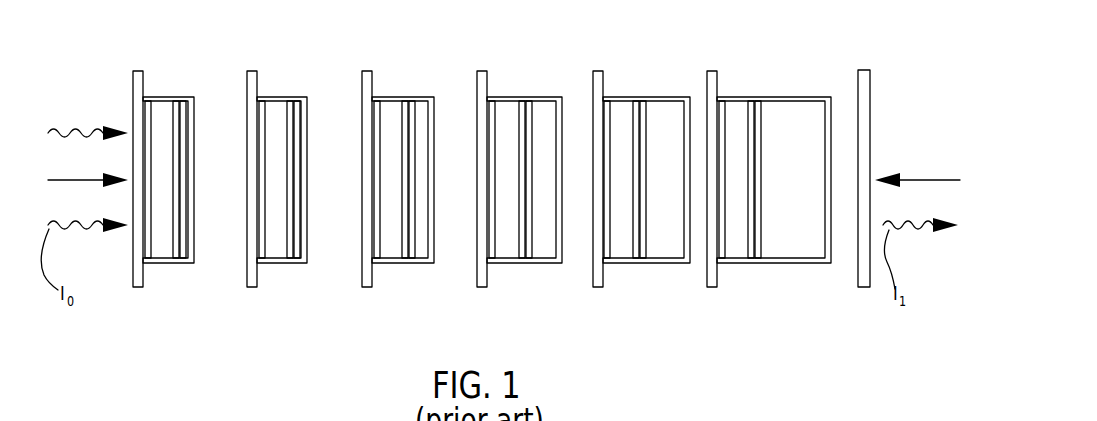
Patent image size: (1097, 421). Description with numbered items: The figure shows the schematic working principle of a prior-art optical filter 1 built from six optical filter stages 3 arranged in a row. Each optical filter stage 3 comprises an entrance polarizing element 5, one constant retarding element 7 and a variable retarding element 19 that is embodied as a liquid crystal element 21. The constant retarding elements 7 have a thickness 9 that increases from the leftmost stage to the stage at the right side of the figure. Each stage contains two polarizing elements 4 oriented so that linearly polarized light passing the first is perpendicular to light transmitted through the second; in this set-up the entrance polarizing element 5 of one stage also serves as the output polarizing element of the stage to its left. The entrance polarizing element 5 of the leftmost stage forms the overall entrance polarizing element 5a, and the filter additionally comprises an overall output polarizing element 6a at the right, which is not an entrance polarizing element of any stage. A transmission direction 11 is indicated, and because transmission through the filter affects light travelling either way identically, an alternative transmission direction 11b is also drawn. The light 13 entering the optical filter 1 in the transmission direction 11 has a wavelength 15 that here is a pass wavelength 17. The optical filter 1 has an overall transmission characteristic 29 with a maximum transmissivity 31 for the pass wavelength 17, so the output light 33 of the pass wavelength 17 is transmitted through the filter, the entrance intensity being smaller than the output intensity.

The optical filter 1 is at (498, 169).
The optical filter stage 3 is at (165, 68).
The polarizing elements 4 is at (498, 204).
The entrance polarizing element 5 is at (418, 205).
The overall entrance polarizing element 5a is at (138, 288).
The overall output polarizing element 6a is at (868, 288).
The constant retarding element 7 is at (195, 107).
The thickness 9 is at (160, 82).
The transmission direction 11 is at (84, 180).
The alternative transmission direction 11b is at (923, 180).
The light 13 is at (88, 172).
The wavelength 15 is at (80, 129).
The pass wavelength 17 is at (88, 229).
The variable retarding element 19 is at (473, 290).
The liquid crystal element 21 is at (168, 271).
The overall transmission characteristic 29 is at (498, 169).
The maximum transmissivity 31 is at (850, 38).
The output light 33 is at (920, 229).